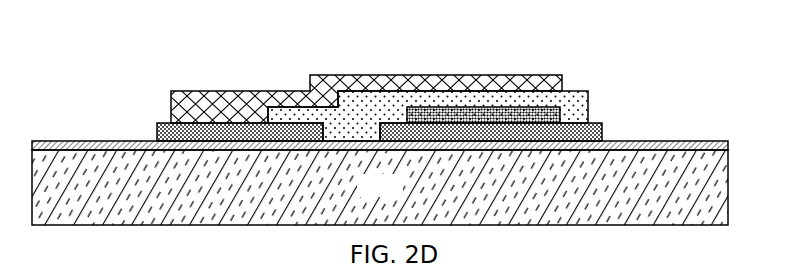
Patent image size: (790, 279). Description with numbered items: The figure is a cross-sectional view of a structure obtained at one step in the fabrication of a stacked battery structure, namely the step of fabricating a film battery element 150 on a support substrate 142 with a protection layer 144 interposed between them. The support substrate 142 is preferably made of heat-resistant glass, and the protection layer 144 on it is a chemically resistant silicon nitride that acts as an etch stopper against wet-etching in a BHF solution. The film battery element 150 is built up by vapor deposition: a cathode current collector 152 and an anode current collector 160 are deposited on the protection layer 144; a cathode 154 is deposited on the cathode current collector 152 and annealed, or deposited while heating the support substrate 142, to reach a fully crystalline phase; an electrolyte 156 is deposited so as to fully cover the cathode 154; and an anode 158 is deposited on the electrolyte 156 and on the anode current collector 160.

The support substrate 142 is at (363, 196).
The protection layer 144 is at (705, 140).
The film battery element 150 is at (593, 68).
The cathode current collector 152 is at (602, 136).
The cathode 154 is at (562, 118).
The electrolyte 156 is at (583, 90).
The anode 158 is at (200, 91).
The anode current collector 160 is at (157, 123).